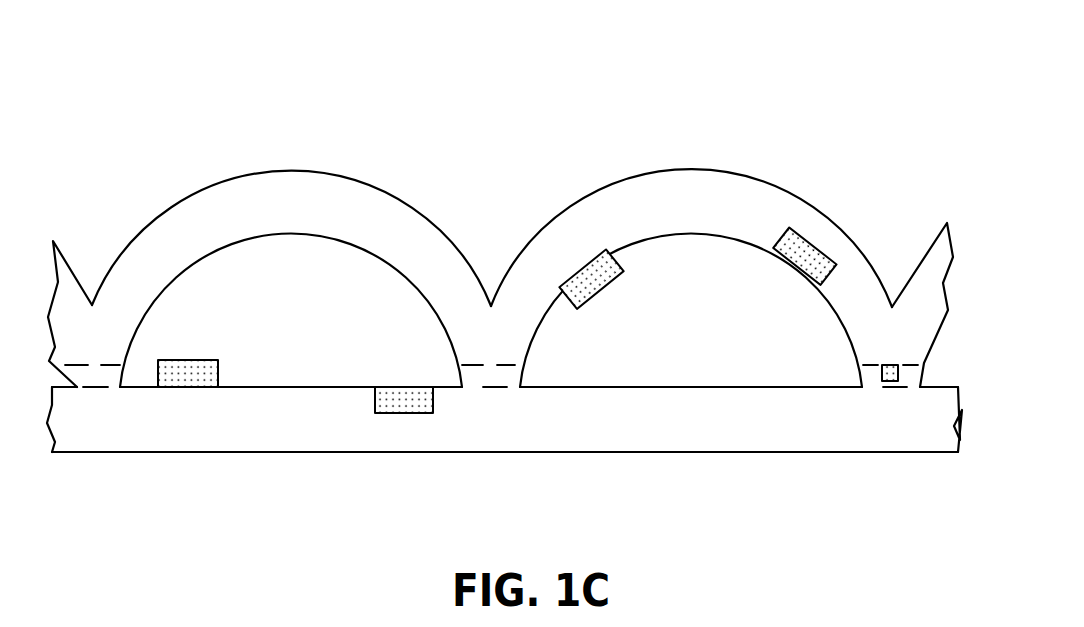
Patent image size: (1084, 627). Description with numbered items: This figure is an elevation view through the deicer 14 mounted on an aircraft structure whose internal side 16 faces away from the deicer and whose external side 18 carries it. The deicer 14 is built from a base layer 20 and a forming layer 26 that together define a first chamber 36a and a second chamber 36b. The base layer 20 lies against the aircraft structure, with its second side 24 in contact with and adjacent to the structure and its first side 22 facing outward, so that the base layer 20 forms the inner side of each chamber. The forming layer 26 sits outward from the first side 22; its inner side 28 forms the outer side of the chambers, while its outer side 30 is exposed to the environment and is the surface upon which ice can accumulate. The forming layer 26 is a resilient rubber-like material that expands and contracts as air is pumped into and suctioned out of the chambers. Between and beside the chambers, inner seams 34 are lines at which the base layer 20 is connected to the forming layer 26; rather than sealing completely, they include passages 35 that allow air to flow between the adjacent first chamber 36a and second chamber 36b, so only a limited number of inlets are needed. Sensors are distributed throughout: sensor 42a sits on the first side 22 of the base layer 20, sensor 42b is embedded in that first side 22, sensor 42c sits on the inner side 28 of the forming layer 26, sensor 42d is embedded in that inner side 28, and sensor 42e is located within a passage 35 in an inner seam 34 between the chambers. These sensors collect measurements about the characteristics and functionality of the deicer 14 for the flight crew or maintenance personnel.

The deicer 14 is at (163, 108).
The internal side 16 is at (52, 490).
The external side 18 is at (340, 124).
The base layer 20 is at (93, 427).
The first side 22 is at (288, 390).
The second side 24 is at (337, 453).
The forming layer 26 is at (413, 202).
The inner side 28 is at (630, 240).
The outer side 30 is at (711, 168).
The inner seams 34 is at (97, 333).
The passages 35 is at (107, 373).
The first chamber 36a is at (708, 328).
The second chamber 36b is at (313, 328).
The sensor 42a is at (188, 377).
The sensor 42b is at (407, 407).
The sensor 42c is at (590, 290).
The sensor 42d is at (802, 255).
The sensor 42e is at (891, 373).